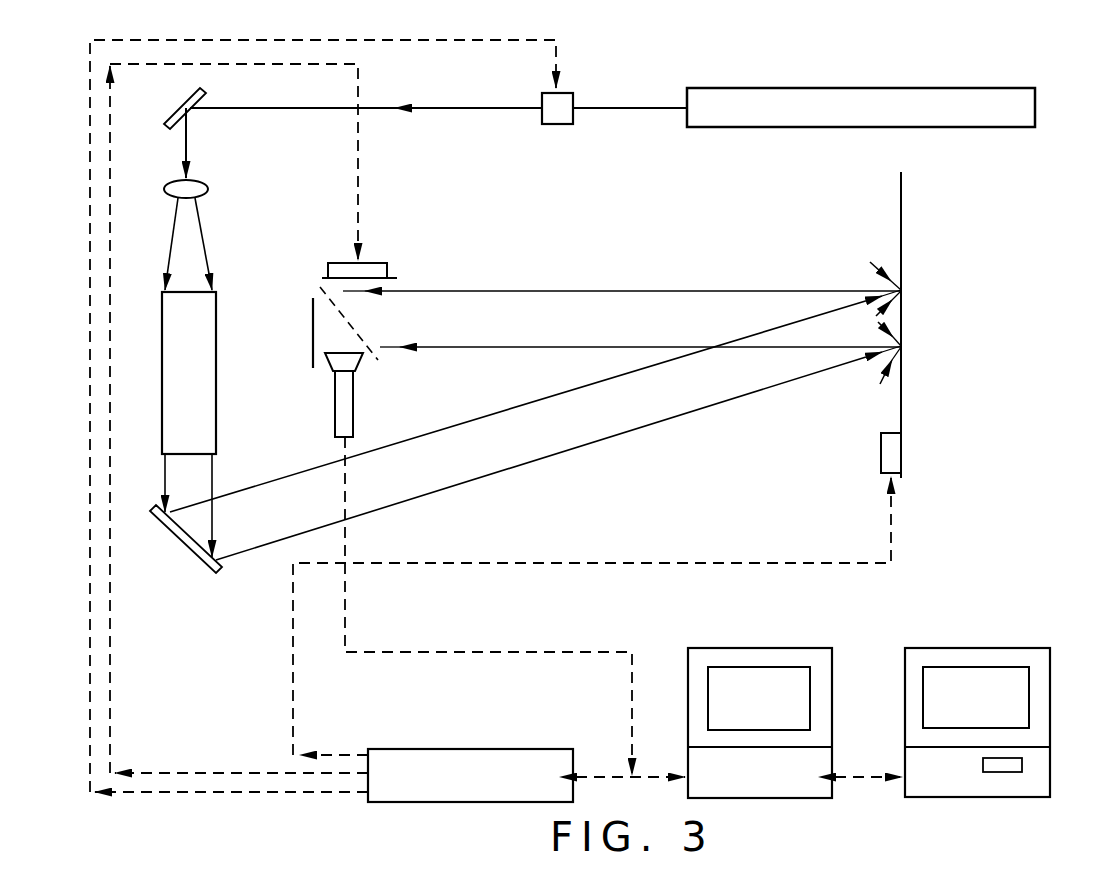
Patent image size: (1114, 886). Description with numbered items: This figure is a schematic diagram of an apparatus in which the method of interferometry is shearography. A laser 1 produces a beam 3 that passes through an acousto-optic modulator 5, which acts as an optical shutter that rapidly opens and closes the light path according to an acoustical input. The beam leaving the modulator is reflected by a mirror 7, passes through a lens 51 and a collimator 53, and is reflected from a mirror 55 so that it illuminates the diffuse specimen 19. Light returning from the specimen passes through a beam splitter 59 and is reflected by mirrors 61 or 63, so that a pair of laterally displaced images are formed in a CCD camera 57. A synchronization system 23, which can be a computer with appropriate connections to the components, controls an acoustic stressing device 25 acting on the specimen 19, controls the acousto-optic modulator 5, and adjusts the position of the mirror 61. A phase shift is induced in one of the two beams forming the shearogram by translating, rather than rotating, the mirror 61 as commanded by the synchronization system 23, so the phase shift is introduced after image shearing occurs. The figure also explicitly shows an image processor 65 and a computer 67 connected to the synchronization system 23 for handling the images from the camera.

The laser 1 is at (897, 88).
The beam 3 is at (660, 108).
The acousto-optic modulator 5 is at (572, 92).
The mirror 7 is at (176, 110).
The diffuse specimen 19 is at (922, 222).
The synchronization system 23 is at (405, 749).
The acoustic stressing device 25 is at (881, 456).
The lens 51 is at (208, 178).
The collimator 53 is at (216, 296).
The mirror 55 is at (192, 551).
The CCD camera 57 is at (337, 418).
The beam splitter 59 is at (386, 368).
The mirror 61 is at (385, 262).
The mirror 63 is at (312, 338).
The image processor 65 is at (817, 648).
The computer 67 is at (1025, 648).